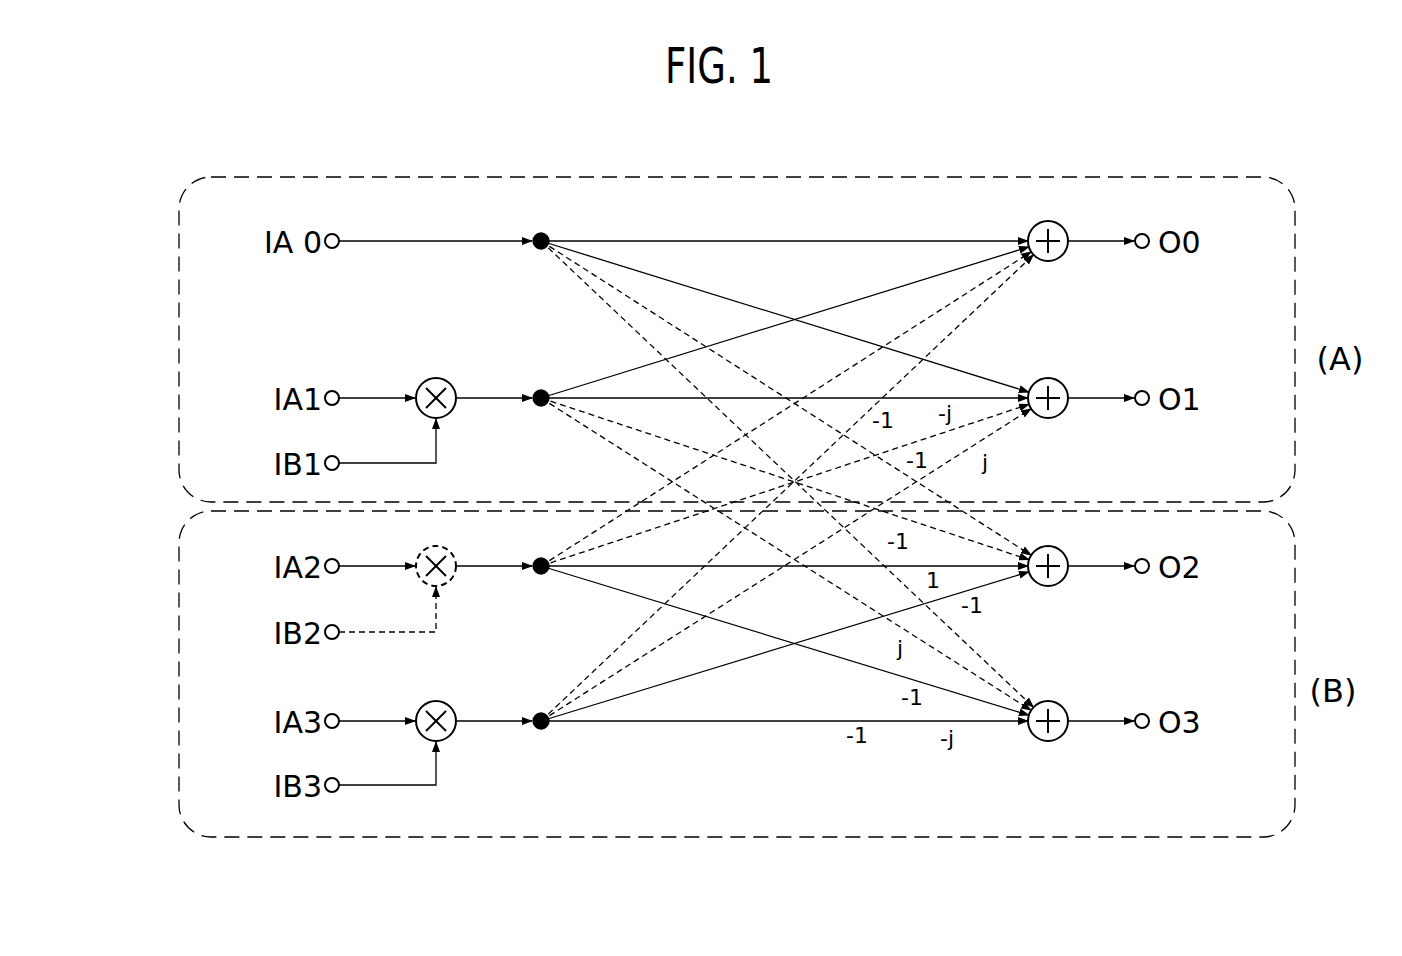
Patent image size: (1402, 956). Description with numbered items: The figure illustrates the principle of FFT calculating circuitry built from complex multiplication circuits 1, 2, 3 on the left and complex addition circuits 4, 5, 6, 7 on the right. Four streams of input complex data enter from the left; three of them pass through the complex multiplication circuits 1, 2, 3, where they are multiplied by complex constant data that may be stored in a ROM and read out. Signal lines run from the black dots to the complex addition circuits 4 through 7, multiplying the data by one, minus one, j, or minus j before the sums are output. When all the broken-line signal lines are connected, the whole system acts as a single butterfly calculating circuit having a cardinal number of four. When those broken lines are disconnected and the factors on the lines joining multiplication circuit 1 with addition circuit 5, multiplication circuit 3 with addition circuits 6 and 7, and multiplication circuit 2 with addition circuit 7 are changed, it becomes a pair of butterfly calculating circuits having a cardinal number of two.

The complex multiplication circuit 1 is at (436, 378).
The complex multiplication circuit 2 is at (451, 580).
The complex multiplication circuit 3 is at (437, 701).
The complex addition circuit 4 is at (1055, 222).
The complex addition circuit 5 is at (1056, 379).
The complex addition circuit 6 is at (1052, 586).
The complex addition circuit 7 is at (1053, 741).